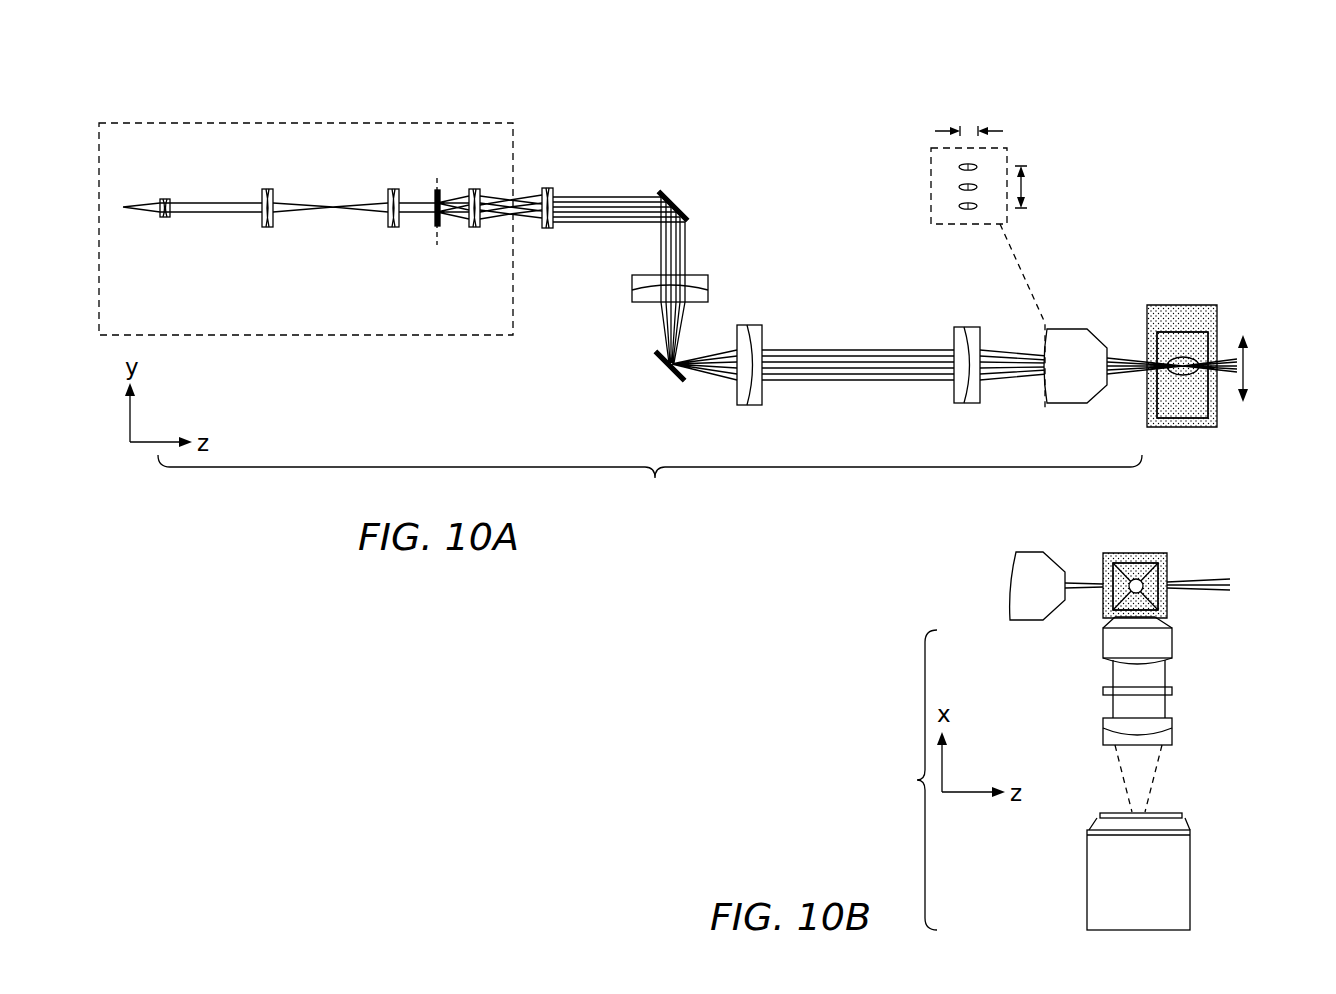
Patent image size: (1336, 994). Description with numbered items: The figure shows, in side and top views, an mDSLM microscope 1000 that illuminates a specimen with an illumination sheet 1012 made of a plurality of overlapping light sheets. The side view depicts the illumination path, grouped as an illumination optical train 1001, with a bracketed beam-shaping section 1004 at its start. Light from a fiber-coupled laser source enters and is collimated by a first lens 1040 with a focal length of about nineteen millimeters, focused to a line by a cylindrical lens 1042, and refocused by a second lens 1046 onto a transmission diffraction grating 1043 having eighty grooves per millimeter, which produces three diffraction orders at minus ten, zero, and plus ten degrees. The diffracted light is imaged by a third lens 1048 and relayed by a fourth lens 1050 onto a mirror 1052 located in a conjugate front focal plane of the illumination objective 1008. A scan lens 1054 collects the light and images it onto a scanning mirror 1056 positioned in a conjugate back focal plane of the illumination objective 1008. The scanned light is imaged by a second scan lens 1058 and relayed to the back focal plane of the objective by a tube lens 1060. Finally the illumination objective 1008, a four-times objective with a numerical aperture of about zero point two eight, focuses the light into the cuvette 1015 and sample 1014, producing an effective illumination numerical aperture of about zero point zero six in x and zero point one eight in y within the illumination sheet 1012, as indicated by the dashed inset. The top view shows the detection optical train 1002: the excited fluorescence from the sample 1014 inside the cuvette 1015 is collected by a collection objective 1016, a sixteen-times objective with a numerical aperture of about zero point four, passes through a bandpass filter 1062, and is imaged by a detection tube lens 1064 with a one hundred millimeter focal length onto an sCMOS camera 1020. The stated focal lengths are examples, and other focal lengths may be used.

In FIG. 10A, the mDSLM microscope 1000 is at (184, 48).
In FIG. 10A, the excitation optical train 1001 is at (650, 482).
In FIG. 10B, the detection optical train 1002 is at (895, 780).
In FIG. 10A, the beam shaping module 1004 is at (187, 122).
In FIG. 10A, the illumination objective 1008 is at (1094, 403).
In FIG. 10B, the illumination objective 1008 is at (1028, 552).
In FIG. 10A, the illumination sheet 1012 is at (932, 147).
In FIG. 10A, the sample 1014 is at (1178, 375).
In FIG. 10B, the sample 1014 is at (1183, 548).
In FIG. 10A, the cuvette 1015 is at (1217, 317).
In FIG. 10B, the cuvette 1015 is at (1103, 560).
In FIG. 10B, the collection objective 1016 is at (1103, 645).
In FIG. 10B, the sCMOS camera 1020 is at (1190, 880).
In FIG. 10A, the lens L1 1040 is at (165, 217).
In FIG. 10A, the cylindrical lens C1 1042 is at (268, 227).
In FIG. 10A, the transmission diffraction grating DG 1043 is at (441, 226).
In FIG. 10A, the lens L2 1046 is at (393, 227).
In FIG. 10A, the lens L3 1048 is at (472, 227).
In FIG. 10A, the lens L4 1050 is at (548, 228).
In FIG. 10A, the mirror 1052 is at (670, 195).
In FIG. 10A, the scan lens L5 1054 is at (632, 283).
In FIG. 10A, the scanning mirror 1056 is at (664, 364).
In FIG. 10A, the second scan lens L6 1058 is at (748, 405).
In FIG. 10A, the tube lens L7 1060 is at (965, 403).
In FIG. 10B, the bandpass filter BP-F 1062 is at (1103, 690).
In FIG. 10B, the tube lens L8 1064 is at (1103, 735).